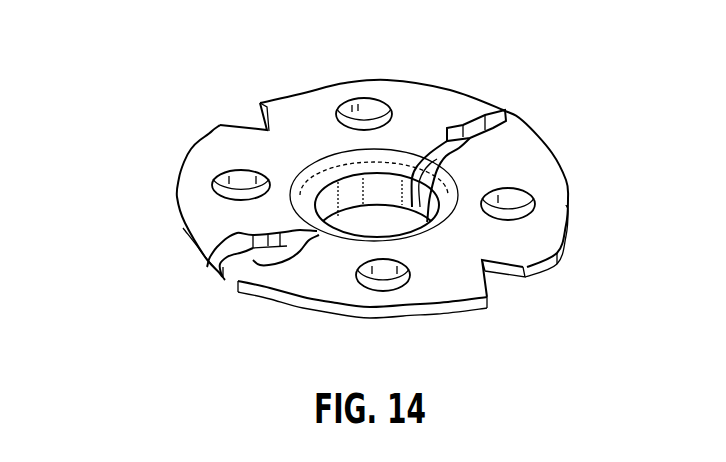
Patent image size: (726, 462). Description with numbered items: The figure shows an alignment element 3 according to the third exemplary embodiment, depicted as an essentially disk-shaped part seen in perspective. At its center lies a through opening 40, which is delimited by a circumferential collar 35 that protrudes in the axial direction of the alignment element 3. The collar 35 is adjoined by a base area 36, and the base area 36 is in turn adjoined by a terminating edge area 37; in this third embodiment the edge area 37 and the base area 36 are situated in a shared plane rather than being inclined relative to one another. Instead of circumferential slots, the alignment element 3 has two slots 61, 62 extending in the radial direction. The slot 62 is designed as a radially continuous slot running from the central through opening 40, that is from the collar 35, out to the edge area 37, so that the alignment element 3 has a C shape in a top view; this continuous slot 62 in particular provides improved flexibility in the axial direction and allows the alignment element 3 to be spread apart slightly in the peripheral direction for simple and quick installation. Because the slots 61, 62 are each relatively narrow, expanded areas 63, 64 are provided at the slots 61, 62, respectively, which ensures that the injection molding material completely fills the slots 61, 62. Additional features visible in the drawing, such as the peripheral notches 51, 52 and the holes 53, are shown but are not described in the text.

The alignment element 3 is at (152, 110).
The collar 35 is at (402, 186).
The base area 36 is at (500, 167).
The edge area 37 is at (547, 238).
The through opening 40 is at (330, 200).
The notch 51 is at (240, 127).
The notch 52 is at (503, 268).
The hole 53 is at (351, 106).
The slot 61 is at (236, 281).
The slot 62 is at (505, 112).
The expanded area 63 is at (458, 143).
The expanded area 64 is at (208, 256).